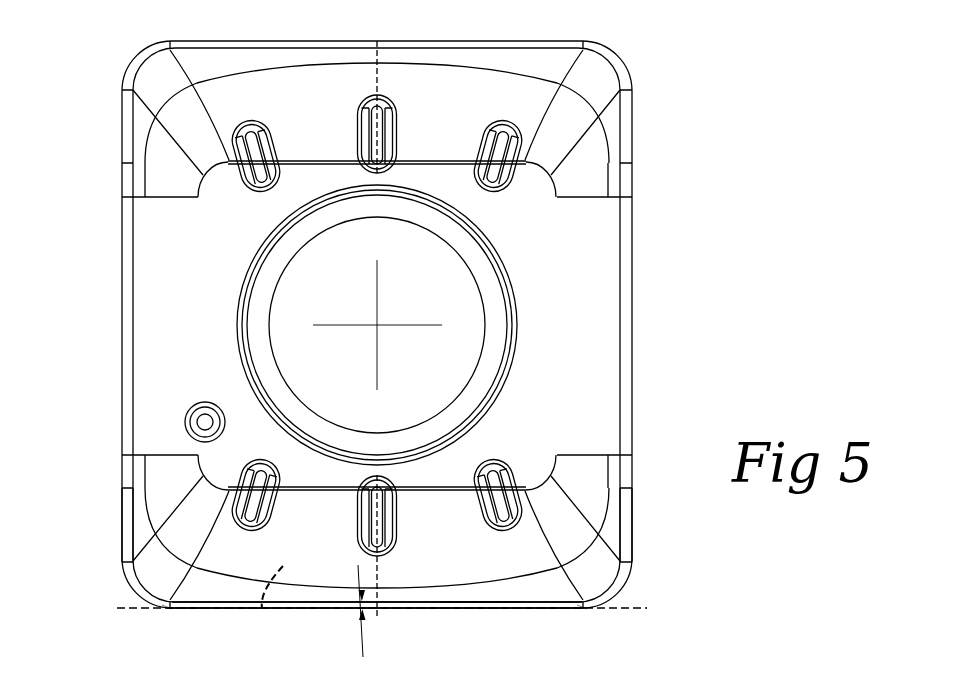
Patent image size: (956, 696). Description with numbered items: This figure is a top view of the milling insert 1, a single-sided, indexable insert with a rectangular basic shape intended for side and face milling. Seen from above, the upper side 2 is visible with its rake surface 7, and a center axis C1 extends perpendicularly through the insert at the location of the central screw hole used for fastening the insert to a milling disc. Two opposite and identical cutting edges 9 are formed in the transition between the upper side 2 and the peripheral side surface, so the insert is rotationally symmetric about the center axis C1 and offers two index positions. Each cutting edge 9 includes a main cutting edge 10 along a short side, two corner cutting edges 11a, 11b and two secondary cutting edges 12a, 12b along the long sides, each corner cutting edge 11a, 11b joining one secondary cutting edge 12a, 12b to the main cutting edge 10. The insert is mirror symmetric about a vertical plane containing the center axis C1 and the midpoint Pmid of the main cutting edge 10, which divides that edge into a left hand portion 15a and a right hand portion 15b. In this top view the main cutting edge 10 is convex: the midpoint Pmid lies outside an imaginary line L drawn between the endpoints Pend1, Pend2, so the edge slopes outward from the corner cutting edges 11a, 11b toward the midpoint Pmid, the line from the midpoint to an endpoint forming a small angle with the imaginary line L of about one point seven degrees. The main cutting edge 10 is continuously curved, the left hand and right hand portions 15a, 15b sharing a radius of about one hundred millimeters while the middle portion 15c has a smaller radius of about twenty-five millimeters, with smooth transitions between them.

The milling insert 1 is at (670, 131).
The upper side 2 is at (595, 259).
The rake surface 7 is at (500, 565).
The cutting edge 9 is at (550, 41).
The main cutting edge 10 is at (475, 610).
The corner cutting edge 11a is at (130, 586).
The corner cutting edge 11b is at (626, 587).
The secondary cutting edge 12a is at (122, 523).
The secondary cutting edge 12b is at (633, 525).
The left hand portion of the main cutting edge 15a is at (238, 608).
The right hand portion of the main cutting edge 15b is at (553, 610).
The middle portion of the main cutting edge 15c is at (393, 614).
The endpoint of the main cutting edge Pend1 is at (167, 606).
The midpoint of the main cutting edge Pmid is at (376, 612).
The endpoint of the main cutting edge Pend2 is at (582, 610).
The imaginary line L is at (280, 575).
The center axis C1 is at (377, 253).